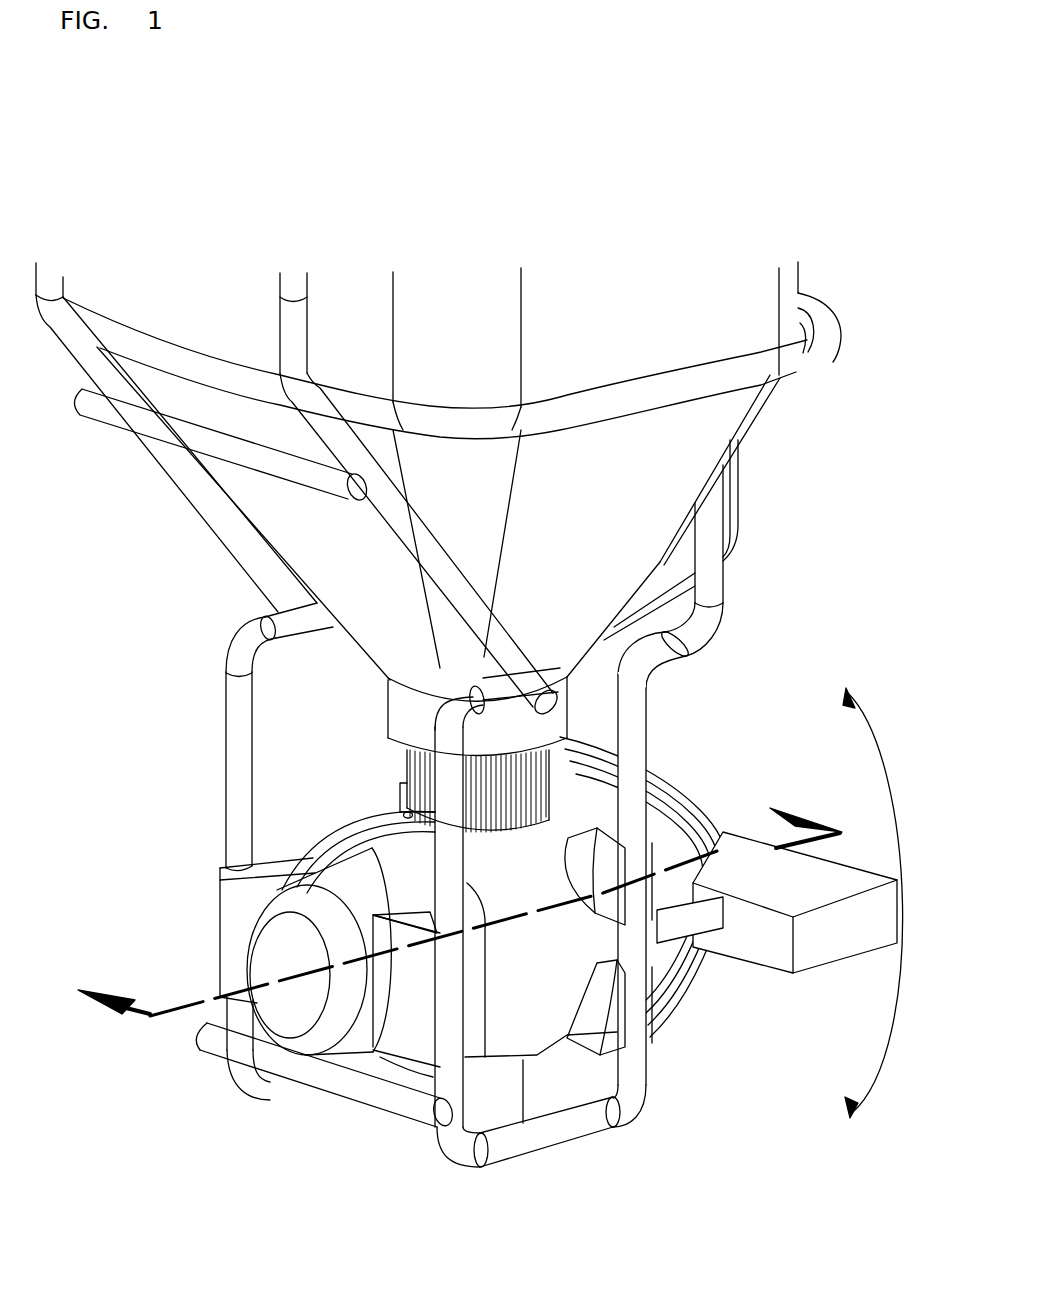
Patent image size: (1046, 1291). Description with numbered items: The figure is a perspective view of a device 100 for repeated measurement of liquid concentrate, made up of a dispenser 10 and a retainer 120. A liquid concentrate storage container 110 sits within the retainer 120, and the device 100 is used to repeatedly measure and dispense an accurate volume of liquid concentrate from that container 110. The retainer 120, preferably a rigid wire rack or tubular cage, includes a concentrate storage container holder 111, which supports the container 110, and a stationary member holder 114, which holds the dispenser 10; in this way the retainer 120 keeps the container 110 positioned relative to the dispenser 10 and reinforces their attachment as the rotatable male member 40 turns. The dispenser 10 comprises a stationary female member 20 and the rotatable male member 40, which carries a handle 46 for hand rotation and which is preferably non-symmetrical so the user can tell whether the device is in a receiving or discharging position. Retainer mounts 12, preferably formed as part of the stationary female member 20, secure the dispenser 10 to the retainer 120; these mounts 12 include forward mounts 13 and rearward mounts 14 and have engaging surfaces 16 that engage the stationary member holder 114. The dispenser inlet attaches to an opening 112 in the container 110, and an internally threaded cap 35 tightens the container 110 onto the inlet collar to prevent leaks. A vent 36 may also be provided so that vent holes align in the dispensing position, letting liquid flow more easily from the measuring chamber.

The device 100 is at (709, 200).
The liquid concentrate storage container 110 is at (720, 443).
The concentrate storage container holder 111 is at (187, 490).
The opening 112 is at (388, 717).
The retainer 120 is at (723, 579).
The stationary member holder 114 is at (638, 1004).
The threaded cap 35 is at (420, 772).
The vent 36 is at (397, 812).
The dispenser 10 is at (513, 1005).
The stationary female member 20 is at (335, 1040).
The rearward mounts 14 is at (233, 883).
The retainer mounts 12 is at (222, 915).
The forward mounts 13 is at (612, 1032).
The engaging surfaces 16 is at (247, 866).
The rotatable male member 40 is at (838, 960).
The handle 46 is at (833, 882).